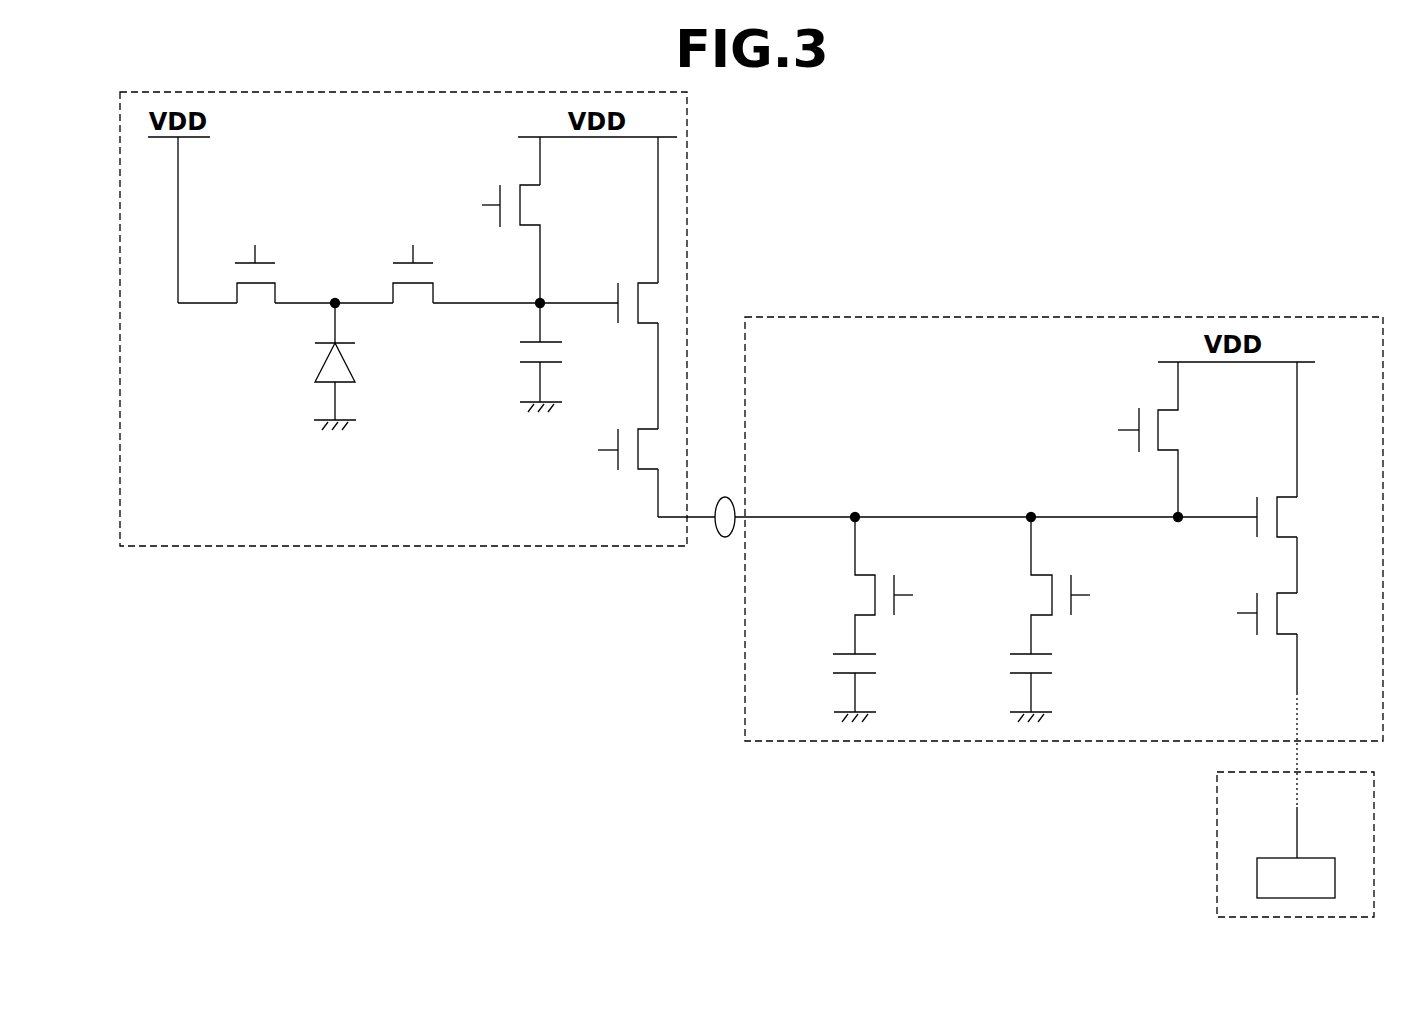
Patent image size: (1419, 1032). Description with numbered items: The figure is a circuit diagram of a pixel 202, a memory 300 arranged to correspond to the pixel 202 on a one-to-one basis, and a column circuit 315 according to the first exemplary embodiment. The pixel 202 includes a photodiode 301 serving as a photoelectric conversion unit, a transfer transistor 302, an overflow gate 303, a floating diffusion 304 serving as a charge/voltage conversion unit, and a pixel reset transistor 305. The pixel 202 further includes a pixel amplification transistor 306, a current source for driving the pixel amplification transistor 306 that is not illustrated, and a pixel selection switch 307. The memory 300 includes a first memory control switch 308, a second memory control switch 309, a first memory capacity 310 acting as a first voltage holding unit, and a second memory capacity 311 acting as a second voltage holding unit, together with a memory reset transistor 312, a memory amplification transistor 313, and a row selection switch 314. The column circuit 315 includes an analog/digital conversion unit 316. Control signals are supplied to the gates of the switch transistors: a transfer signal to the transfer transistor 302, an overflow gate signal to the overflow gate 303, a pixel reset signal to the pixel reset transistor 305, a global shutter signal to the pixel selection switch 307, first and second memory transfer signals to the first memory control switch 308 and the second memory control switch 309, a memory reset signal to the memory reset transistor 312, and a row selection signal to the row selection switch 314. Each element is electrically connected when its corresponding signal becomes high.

The pixel 202 is at (687, 162).
The memory 300 is at (929, 317).
The photodiode 301 is at (323, 388).
The transfer transistor 302 is at (412, 306).
The overflow gate 303 is at (257, 305).
The floating diffusion 304 is at (533, 365).
The pixel reset transistor 305 is at (537, 206).
The pixel amplification transistor 306 is at (652, 306).
The pixel selection switch 307 is at (653, 452).
The first memory control switch 308 is at (852, 595).
The second memory control switch 309 is at (1027, 595).
The first memory capacity 310 is at (834, 663).
The second memory capacity 311 is at (1008, 663).
The memory reset transistor 312 is at (1177, 431).
The memory amplification transistor 313 is at (1293, 517).
The row selection switch 314 is at (1293, 612).
The column circuit 315 is at (1217, 823).
The analog/digital conversion unit 316 is at (1328, 858).